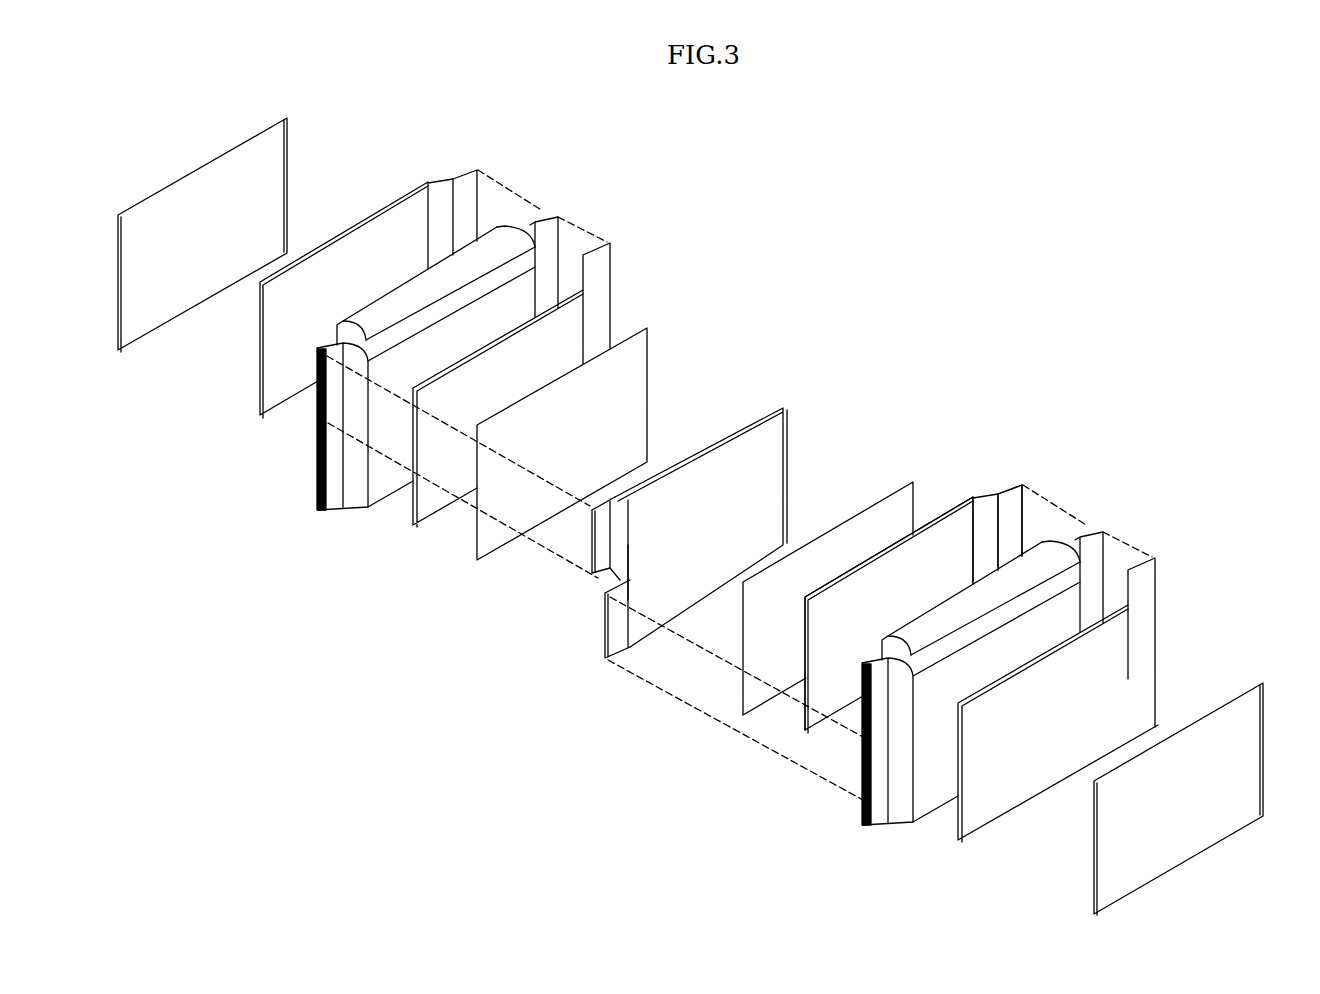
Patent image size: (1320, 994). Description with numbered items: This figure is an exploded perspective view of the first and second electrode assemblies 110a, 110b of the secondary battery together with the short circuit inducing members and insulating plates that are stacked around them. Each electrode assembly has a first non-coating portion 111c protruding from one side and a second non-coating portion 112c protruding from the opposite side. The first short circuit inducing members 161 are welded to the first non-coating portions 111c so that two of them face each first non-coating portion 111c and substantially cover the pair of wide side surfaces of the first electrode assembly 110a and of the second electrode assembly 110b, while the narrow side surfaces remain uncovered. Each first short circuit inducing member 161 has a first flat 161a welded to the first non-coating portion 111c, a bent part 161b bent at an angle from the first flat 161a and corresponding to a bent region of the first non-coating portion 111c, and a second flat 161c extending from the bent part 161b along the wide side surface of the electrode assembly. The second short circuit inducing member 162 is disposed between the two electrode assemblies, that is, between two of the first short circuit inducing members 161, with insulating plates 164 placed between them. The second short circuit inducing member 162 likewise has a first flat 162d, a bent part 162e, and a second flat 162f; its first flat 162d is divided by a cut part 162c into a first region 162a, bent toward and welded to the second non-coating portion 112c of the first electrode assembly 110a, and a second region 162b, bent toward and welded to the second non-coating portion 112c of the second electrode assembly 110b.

The first electrode assembly 110a is at (1060, 537).
The second electrode assembly 110b is at (499, 222).
The first non-coating portion 111c is at (553, 233).
The second non-coating portion 112c is at (338, 513).
The first short circuit inducing member 161 is at (459, 165).
The first flat 161a is at (1020, 503).
The bent part 161b is at (988, 512).
The second flat 161c is at (943, 533).
The second short circuit inducing member 162 is at (652, 507).
The first region 162a is at (612, 637).
The second region 162b is at (590, 558).
The cut part 162c is at (607, 582).
The first flat 162d is at (539, 580).
The bent part 162e is at (623, 543).
The second flat 162f is at (787, 436).
The insulating plate 164 is at (285, 158).